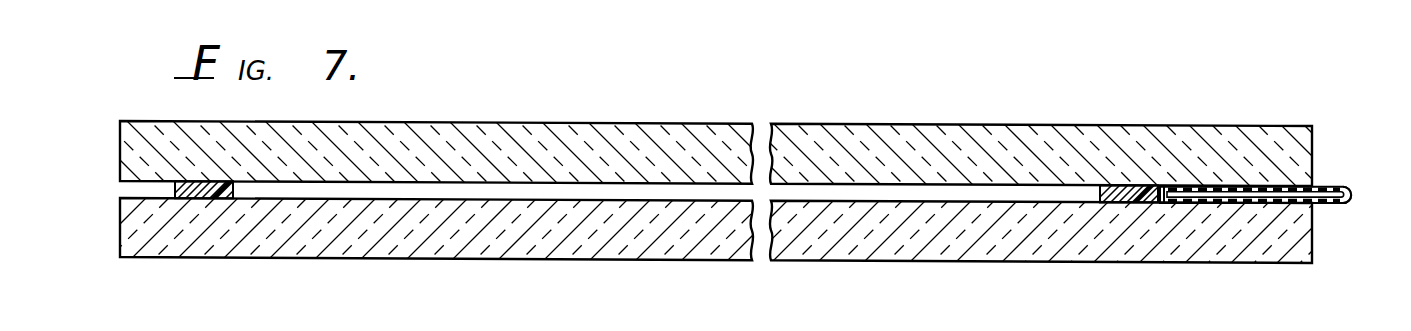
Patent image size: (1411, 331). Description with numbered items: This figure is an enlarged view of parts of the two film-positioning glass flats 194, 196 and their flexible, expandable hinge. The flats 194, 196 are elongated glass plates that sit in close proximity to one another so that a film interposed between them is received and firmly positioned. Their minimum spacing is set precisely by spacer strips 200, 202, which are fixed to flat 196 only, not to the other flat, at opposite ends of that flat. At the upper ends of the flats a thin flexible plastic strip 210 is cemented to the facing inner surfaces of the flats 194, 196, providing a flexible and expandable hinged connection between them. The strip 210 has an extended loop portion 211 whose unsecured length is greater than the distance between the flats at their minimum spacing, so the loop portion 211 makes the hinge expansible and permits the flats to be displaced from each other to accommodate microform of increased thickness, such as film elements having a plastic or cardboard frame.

The glass flat 194 is at (783, 258).
The glass flat 196 is at (783, 125).
The spacer strip 200 is at (218, 181).
The spacer strip 202 is at (1122, 186).
The plastic strip 210 is at (1263, 205).
The extended loop portion 211 is at (1336, 186).